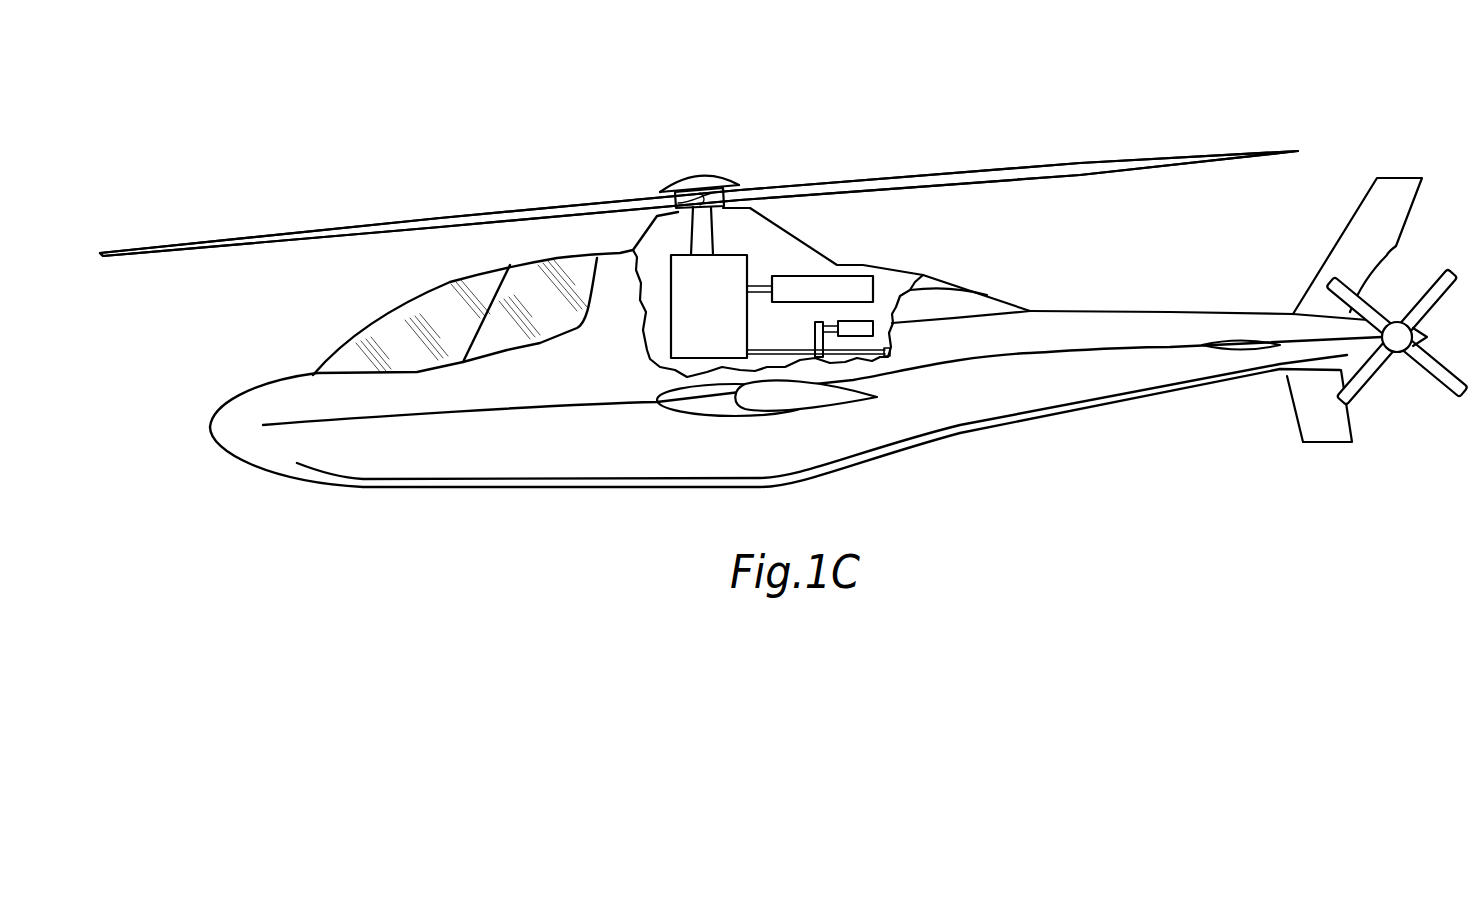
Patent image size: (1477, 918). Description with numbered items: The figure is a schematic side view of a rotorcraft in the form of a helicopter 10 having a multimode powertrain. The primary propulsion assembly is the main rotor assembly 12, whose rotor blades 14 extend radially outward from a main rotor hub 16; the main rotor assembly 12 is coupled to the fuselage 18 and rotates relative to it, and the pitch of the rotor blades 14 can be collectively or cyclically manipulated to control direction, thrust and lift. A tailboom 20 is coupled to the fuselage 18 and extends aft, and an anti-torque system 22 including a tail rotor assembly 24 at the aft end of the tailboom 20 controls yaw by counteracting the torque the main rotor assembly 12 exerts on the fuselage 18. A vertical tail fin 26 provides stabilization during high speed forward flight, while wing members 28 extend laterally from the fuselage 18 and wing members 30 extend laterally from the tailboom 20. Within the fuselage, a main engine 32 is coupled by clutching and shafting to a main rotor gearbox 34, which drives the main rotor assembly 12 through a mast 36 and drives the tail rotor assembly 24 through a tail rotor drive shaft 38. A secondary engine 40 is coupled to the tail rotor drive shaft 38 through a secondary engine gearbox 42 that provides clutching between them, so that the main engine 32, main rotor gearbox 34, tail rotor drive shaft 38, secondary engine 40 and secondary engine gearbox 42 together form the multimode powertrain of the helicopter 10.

The helicopter 10 is at (893, 119).
The main rotor assembly 12 is at (818, 186).
The rotor blades 14 is at (502, 213).
The main rotor hub 16 is at (698, 180).
The fuselage 18 is at (530, 458).
The tailboom 20 is at (1065, 390).
The anti-torque system 22 is at (1433, 278).
The tail rotor assembly 24 is at (1437, 377).
The vertical tail fin 26 is at (1373, 192).
The wing members 28 is at (707, 412).
The wing members 30 is at (1227, 351).
The main engine 32 is at (858, 278).
The main rotor gearbox 34 is at (709, 306).
The mast 36 is at (713, 233).
The tail rotor drive shaft 38 is at (888, 357).
The secondary engine 40 is at (858, 336).
The secondary engine gearbox 42 is at (815, 336).